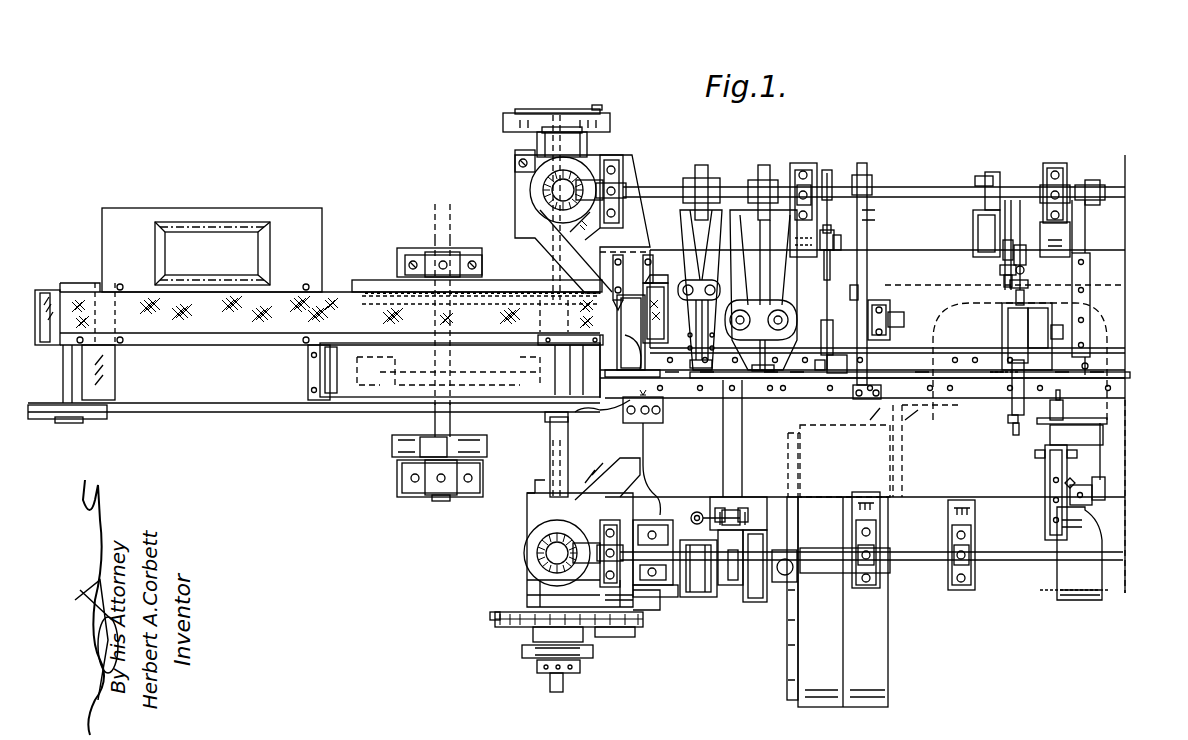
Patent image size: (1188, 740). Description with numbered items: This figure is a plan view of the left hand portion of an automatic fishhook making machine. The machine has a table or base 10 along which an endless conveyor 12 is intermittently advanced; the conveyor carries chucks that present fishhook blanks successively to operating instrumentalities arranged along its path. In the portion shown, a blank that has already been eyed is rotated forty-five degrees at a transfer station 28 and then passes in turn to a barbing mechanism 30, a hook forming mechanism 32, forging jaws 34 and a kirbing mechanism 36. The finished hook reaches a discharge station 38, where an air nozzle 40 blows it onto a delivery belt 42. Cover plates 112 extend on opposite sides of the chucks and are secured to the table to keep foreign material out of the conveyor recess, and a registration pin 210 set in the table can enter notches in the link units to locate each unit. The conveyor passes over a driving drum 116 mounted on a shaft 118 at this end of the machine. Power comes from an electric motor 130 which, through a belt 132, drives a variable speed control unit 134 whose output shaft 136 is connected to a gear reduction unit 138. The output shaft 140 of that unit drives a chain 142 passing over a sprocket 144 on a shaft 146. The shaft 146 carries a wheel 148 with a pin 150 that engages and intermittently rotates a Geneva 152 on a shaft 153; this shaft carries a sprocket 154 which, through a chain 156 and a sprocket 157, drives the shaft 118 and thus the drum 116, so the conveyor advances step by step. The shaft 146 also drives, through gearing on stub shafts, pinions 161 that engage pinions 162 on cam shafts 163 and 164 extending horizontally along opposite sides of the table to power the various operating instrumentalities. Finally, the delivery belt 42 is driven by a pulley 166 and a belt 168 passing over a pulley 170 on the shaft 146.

The table or base 10 is at (1110, 270).
The endless conveyor 12 is at (1118, 372).
The transfer station 28 is at (1062, 408).
The barbing mechanism 30 is at (1010, 385).
The hook forming mechanism 32 is at (855, 393).
The forging jaws 34 is at (775, 372).
The kirbing mechanism 36 is at (700, 370).
The discharge station 38 is at (630, 378).
The air nozzle 40 is at (640, 398).
The delivery belt 42 is at (545, 318).
The cover plates 112 is at (985, 370).
The driving drum 116 is at (365, 398).
The shaft 118 is at (455, 433).
The electric motor 130 is at (1108, 318).
The belt 132 is at (900, 418).
The variable speed control unit 134 is at (880, 607).
The output shaft 136 is at (720, 575).
The gear reduction unit 138 is at (640, 600).
The output shaft 140 is at (563, 685).
The chain 142 is at (497, 625).
The sprocket 144 is at (520, 635).
The shaft 146 is at (561, 110).
The wheel 148 is at (585, 112).
The pin 150 is at (610, 118).
The Geneva 152 is at (610, 130).
The shaft 153 is at (535, 145).
The sprocket 154 is at (525, 272).
The chain 156 is at (493, 275).
The sprocket 157 is at (360, 292).
The pinions 161 is at (545, 200).
The pinions 162 is at (560, 190).
The cam shaft 163 is at (655, 190).
The cam shaft 164 is at (700, 595).
The pulley 166 is at (55, 414).
The belt 168 is at (250, 408).
The pulley 170 is at (485, 470).
The registration pin 210 is at (1108, 343).